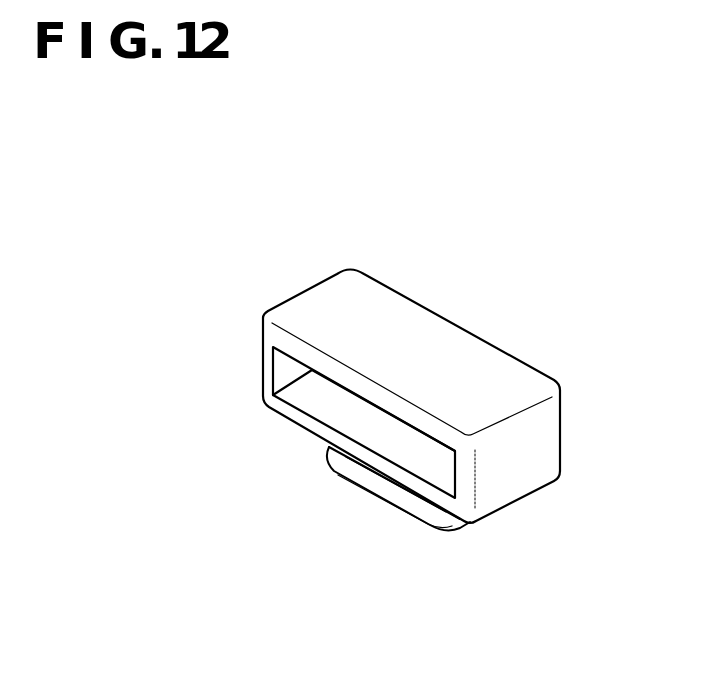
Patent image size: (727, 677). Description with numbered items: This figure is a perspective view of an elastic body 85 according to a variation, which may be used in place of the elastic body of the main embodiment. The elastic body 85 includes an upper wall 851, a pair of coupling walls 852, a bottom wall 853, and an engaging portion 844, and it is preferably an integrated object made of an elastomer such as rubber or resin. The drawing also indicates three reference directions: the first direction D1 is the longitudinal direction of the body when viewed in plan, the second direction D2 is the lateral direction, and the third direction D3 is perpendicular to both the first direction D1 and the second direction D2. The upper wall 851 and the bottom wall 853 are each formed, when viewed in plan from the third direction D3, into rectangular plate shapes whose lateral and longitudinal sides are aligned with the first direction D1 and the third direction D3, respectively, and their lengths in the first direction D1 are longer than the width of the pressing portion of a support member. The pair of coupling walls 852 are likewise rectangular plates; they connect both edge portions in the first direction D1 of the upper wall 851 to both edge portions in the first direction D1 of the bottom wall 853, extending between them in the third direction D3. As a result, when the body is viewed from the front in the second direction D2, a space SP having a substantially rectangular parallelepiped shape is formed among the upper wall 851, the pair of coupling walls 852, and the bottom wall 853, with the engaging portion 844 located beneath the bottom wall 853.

The elastic body 85 is at (178, 267).
The upper wall 851 is at (463, 342).
The coupling walls 852 is at (262, 363).
The bottom wall 853 is at (290, 412).
The engaging portion 844 is at (335, 473).
The space SP is at (344, 412).
The first direction D1 is at (523, 218).
The second direction D2 is at (607, 570).
The third direction D3 is at (648, 388).